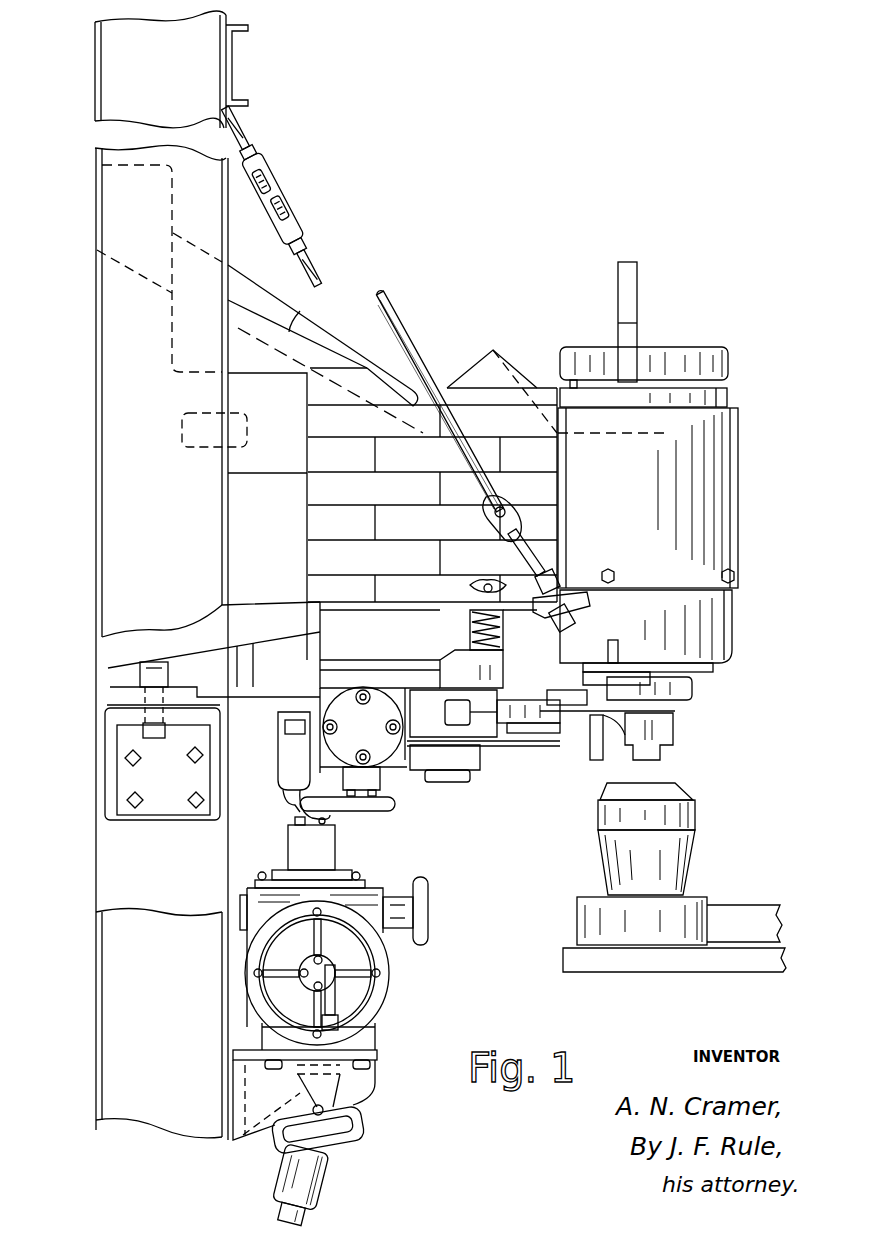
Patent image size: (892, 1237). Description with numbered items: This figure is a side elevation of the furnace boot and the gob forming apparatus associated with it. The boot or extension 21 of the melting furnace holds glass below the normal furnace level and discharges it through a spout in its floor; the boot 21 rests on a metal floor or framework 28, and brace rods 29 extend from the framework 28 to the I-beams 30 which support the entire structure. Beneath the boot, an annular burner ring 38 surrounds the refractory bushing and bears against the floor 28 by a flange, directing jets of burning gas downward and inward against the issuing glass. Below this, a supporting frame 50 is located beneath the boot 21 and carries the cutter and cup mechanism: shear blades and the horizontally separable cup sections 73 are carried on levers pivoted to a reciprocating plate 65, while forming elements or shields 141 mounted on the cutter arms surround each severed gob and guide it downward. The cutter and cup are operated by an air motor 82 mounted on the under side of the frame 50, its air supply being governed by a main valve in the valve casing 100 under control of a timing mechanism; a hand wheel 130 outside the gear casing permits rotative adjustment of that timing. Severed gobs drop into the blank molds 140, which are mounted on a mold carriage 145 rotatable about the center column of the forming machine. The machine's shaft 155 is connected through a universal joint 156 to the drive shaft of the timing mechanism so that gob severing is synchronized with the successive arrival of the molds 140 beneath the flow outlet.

The I-beams 30 is at (108, 200).
The brace rods 29 is at (397, 313).
The boot or extension 21 is at (480, 395).
The supporting frame 50 is at (385, 678).
The metal floor or framework 28 is at (515, 634).
The annular member or ring 38 is at (690, 688).
The horizontally separable sections 73 is at (675, 725).
The reciprocating plate 65 is at (508, 740).
The forming elements or shields 141 is at (633, 755).
The air motor 82 is at (395, 760).
The valve casing 100 is at (322, 847).
The blank molds 140 is at (680, 850).
The hand wheel 130 is at (420, 930).
The mold carriage 145 is at (683, 960).
The universal joint 156 is at (352, 1118).
The shaft 155 is at (305, 1212).